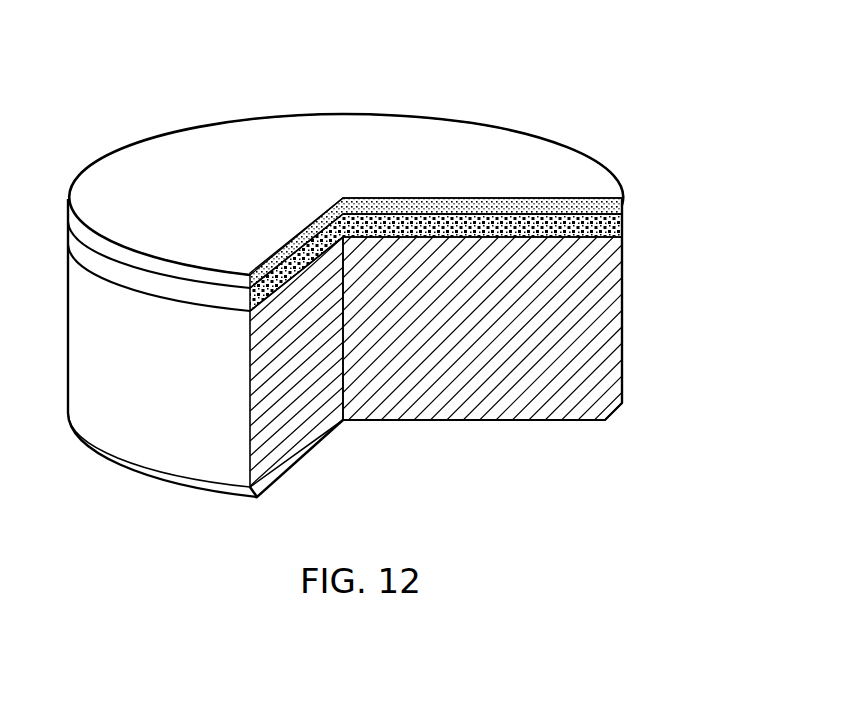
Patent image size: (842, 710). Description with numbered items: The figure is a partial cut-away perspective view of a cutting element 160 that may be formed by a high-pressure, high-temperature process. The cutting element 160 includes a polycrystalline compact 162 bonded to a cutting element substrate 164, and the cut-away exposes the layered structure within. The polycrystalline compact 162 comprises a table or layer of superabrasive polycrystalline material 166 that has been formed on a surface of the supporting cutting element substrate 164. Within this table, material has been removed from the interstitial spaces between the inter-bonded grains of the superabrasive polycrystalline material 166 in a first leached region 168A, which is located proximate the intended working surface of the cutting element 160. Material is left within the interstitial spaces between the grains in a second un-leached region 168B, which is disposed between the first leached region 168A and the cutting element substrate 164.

The cutting element 160 is at (128, 72).
The polycrystalline compact 162 is at (668, 204).
The cutting element substrate 164 is at (597, 316).
The superabrasive polycrystalline material 166 is at (211, 151).
The first leached region 168A is at (561, 204).
The second un-leached region 168B is at (589, 222).